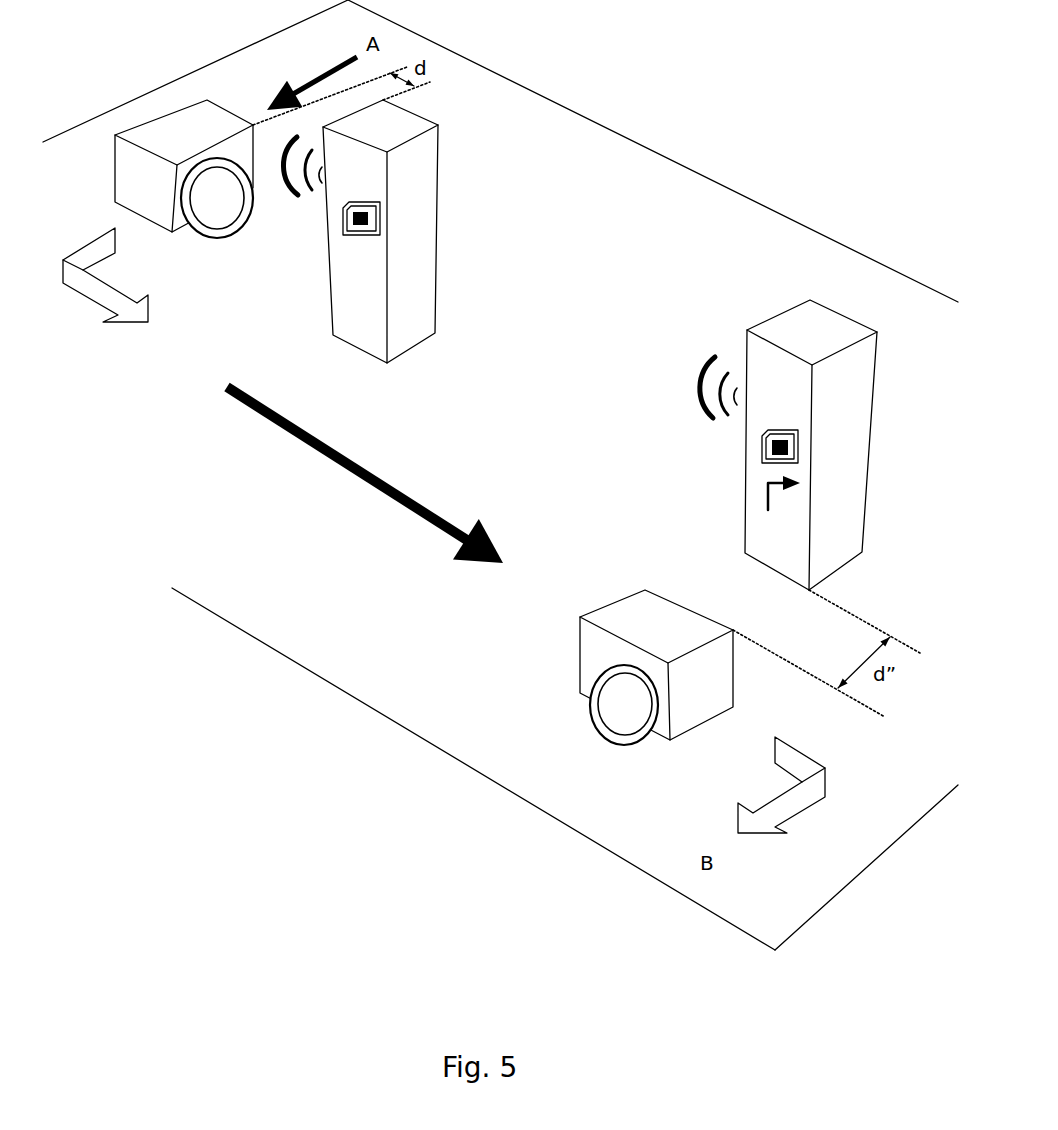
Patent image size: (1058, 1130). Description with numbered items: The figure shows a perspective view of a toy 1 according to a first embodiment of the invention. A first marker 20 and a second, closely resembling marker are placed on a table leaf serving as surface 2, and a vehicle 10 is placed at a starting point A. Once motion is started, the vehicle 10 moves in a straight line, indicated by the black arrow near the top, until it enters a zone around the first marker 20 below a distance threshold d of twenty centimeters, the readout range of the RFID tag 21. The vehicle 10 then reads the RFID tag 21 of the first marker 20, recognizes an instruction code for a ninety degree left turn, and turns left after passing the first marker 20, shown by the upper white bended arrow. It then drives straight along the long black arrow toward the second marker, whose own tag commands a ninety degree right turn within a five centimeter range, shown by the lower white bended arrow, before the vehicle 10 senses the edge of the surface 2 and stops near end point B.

The toy 1 is at (500, 475).
The surface 2 is at (747, 93).
The vehicle 10 is at (424, 400).
The first marker 20 is at (407, 231).
The RFID tag 21 is at (428, 246).